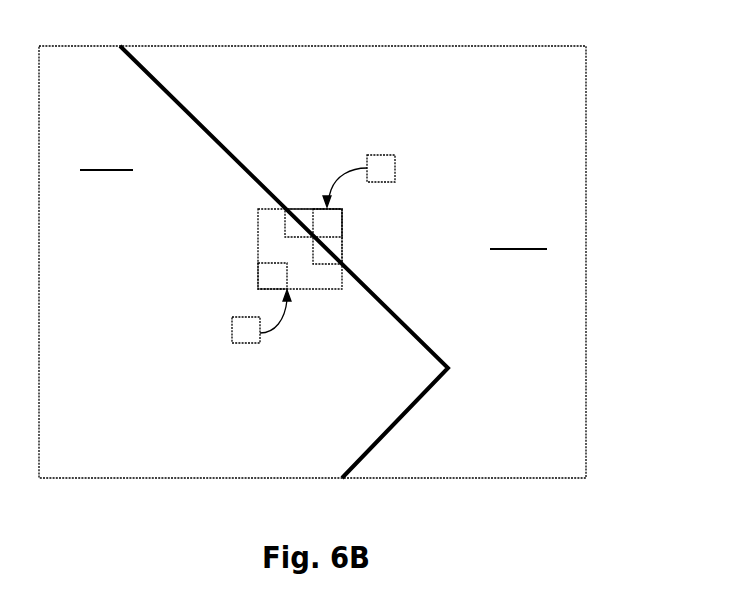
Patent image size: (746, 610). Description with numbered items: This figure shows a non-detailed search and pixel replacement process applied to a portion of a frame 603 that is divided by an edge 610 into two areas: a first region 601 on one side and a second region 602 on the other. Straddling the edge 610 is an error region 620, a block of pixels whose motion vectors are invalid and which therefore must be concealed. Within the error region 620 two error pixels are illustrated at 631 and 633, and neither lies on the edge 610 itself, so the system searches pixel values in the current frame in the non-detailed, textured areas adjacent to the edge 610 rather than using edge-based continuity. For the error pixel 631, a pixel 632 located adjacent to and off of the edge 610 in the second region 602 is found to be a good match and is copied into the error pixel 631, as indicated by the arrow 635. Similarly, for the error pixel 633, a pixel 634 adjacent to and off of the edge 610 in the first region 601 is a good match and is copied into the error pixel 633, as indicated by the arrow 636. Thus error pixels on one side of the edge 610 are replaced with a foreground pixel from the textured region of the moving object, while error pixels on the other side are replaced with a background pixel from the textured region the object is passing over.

The first region 601 is at (106, 154).
The second region 602 is at (518, 234).
The frame 603 is at (586, 158).
The edge 610 is at (455, 365).
The error region 620 is at (342, 250).
The error pixel 631 is at (342, 222).
The pixel 632 is at (395, 166).
The error pixel 633 is at (258, 273).
The pixel 634 is at (232, 330).
The first mapping arrow 635 is at (337, 180).
The second mapping arrow 636 is at (290, 318).